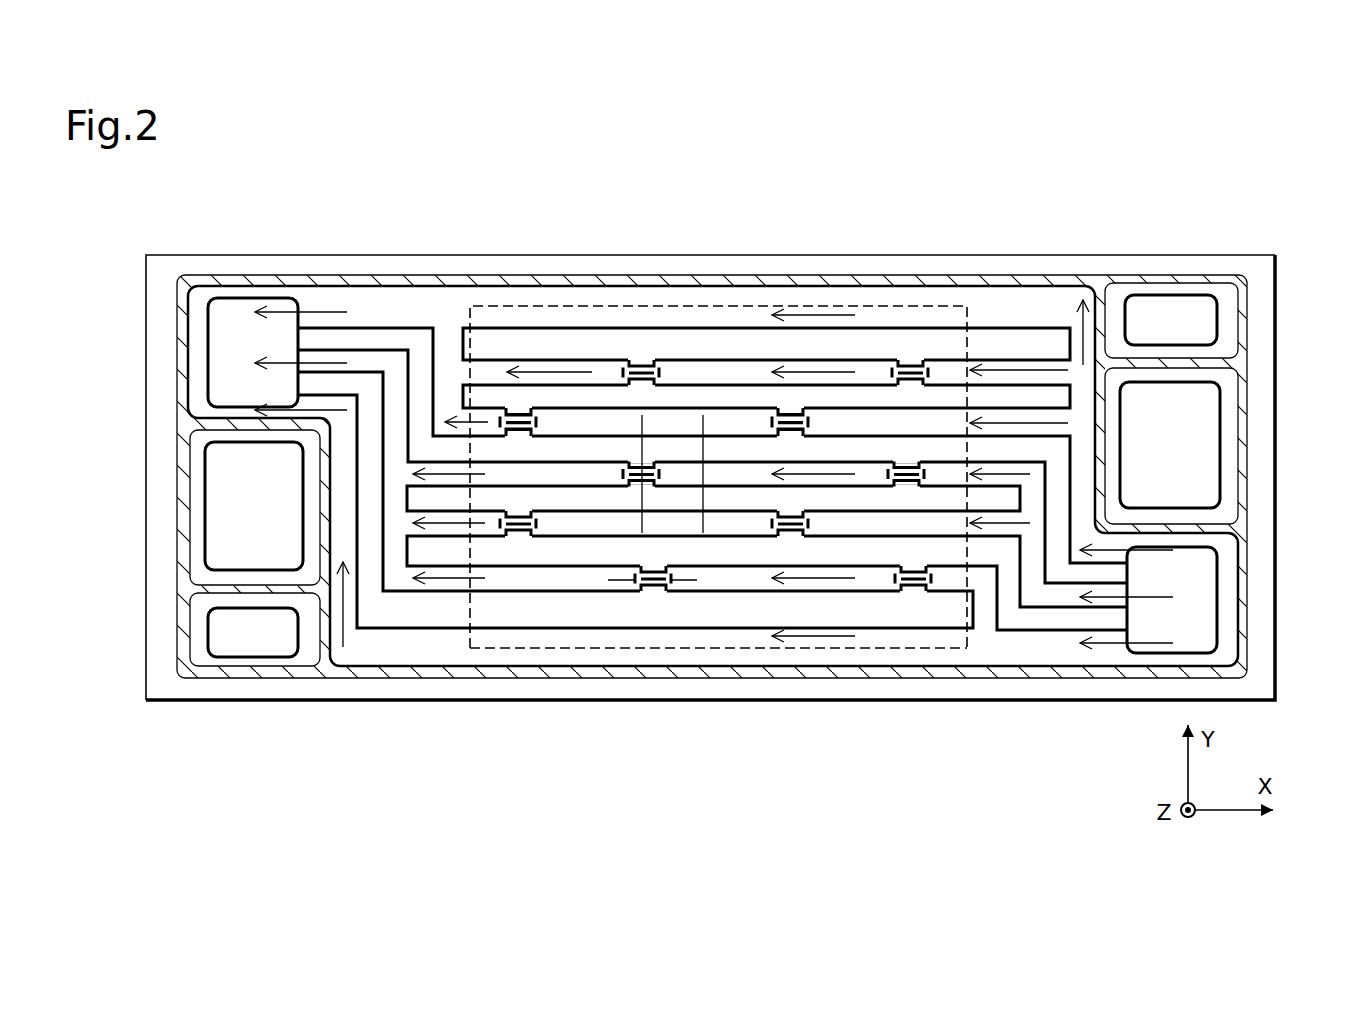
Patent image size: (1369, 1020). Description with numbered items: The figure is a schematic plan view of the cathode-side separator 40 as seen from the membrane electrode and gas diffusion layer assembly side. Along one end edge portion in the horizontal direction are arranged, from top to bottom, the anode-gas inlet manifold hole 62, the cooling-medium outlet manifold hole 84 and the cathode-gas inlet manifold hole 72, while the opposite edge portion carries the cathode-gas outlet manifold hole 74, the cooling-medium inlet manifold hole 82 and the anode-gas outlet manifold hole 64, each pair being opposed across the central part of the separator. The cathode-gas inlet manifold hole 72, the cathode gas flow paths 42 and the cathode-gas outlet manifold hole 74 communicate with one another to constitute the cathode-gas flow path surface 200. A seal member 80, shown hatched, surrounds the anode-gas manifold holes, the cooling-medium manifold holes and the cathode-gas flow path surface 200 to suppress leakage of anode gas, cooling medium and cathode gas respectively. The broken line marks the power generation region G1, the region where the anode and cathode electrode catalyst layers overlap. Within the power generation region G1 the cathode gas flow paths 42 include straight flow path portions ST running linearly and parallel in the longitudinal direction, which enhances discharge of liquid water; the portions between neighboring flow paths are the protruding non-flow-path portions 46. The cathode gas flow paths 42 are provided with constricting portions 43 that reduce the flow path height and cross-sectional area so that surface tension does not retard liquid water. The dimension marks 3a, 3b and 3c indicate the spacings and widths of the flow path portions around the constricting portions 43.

The cathode-side separator 40 is at (1225, 255).
The cathode gas flow paths 42 is at (492, 422).
The constricting portions 43 is at (634, 465).
The non-flow-path portions 46 is at (565, 398).
The anode-gas inlet manifold hole 62 is at (1173, 308).
The anode-gas outlet manifold hole 64 is at (240, 645).
The cathode-gas inlet manifold hole 72 is at (1190, 602).
The cathode-gas outlet manifold hole 74 is at (242, 322).
The seal member 80 is at (1041, 275).
The cooling-medium inlet manifold hole 82 is at (248, 518).
The cooling-medium outlet manifold hole 84 is at (1185, 440).
The cathode-gas flow path surface 200 is at (877, 317).
The straight flow path portions ST is at (722, 327).
The power generation region G1 is at (693, 655).
The width dimension 3a is at (642, 527).
The width dimension 3b is at (703, 527).
The gap dimension 3c is at (697, 580).